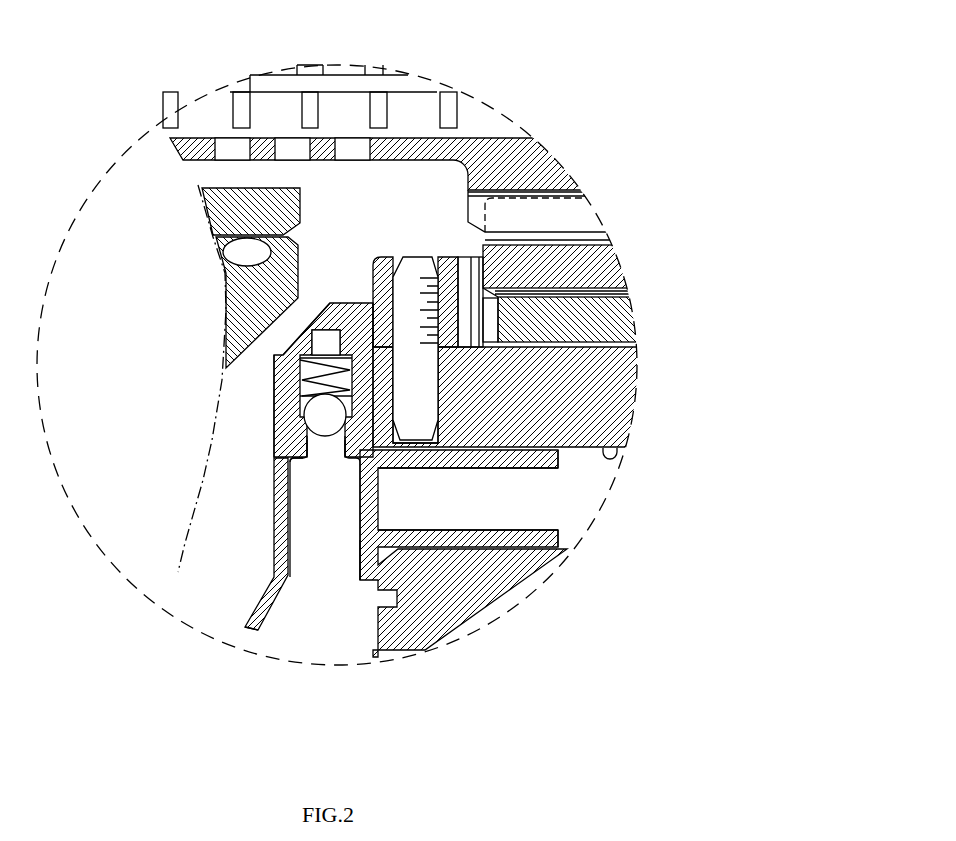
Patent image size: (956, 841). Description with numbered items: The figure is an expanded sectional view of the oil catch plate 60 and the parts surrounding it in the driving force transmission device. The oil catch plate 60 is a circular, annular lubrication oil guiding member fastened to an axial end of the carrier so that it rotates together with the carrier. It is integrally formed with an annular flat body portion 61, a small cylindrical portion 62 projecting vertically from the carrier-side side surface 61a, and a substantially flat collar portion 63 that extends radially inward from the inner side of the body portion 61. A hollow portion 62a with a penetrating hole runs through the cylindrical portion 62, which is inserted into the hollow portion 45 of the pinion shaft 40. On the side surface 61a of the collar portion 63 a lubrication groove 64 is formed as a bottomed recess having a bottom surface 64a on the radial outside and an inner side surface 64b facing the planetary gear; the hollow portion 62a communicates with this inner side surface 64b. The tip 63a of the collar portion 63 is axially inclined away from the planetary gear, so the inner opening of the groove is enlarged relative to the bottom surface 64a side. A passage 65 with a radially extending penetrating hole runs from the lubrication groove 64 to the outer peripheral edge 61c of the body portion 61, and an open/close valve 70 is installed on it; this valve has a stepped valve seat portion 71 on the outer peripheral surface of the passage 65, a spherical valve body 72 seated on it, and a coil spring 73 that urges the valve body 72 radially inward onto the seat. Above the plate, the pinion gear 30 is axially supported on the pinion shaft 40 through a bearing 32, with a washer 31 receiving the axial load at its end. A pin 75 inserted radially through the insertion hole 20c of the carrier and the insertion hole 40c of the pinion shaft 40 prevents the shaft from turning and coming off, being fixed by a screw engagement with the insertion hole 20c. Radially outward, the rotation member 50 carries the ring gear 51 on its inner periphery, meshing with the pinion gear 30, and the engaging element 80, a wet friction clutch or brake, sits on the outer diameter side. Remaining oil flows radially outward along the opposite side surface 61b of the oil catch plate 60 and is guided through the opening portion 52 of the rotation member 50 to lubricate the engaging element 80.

The engaging element 80 is at (342, 80).
The rotation member 50 is at (532, 157).
The ring gear 51 is at (567, 213).
The opening portion 52 is at (284, 160).
The pinion gear 30 is at (600, 264).
The washer 31 is at (462, 258).
The bearing 32 is at (600, 312).
The insertion hole 20c is at (374, 331).
The pin 75 is at (402, 261).
The pinion shaft 40 is at (606, 389).
The insertion hole 40c is at (432, 372).
The hollow portion 45 is at (612, 460).
The oil catch plate 60 is at (273, 402).
The body portion 61 is at (280, 357).
The side surface 61a is at (222, 259).
The side surface 61b is at (271, 408).
The outer peripheral edge 61c is at (332, 303).
The passage 65 is at (327, 326).
The open/close valve 70 is at (314, 420).
The valve seat portion 71 is at (300, 443).
The valve body 72 is at (275, 460).
The coil spring 73 is at (299, 395).
The cylindrical portion 62 is at (560, 515).
The hollow portion 62a is at (538, 468).
The collar portion 63 is at (272, 558).
The tip 63a is at (248, 630).
The lubrication groove 64 is at (322, 576).
The bottom surface 64a is at (302, 463).
The inner side surface 64b is at (360, 548).